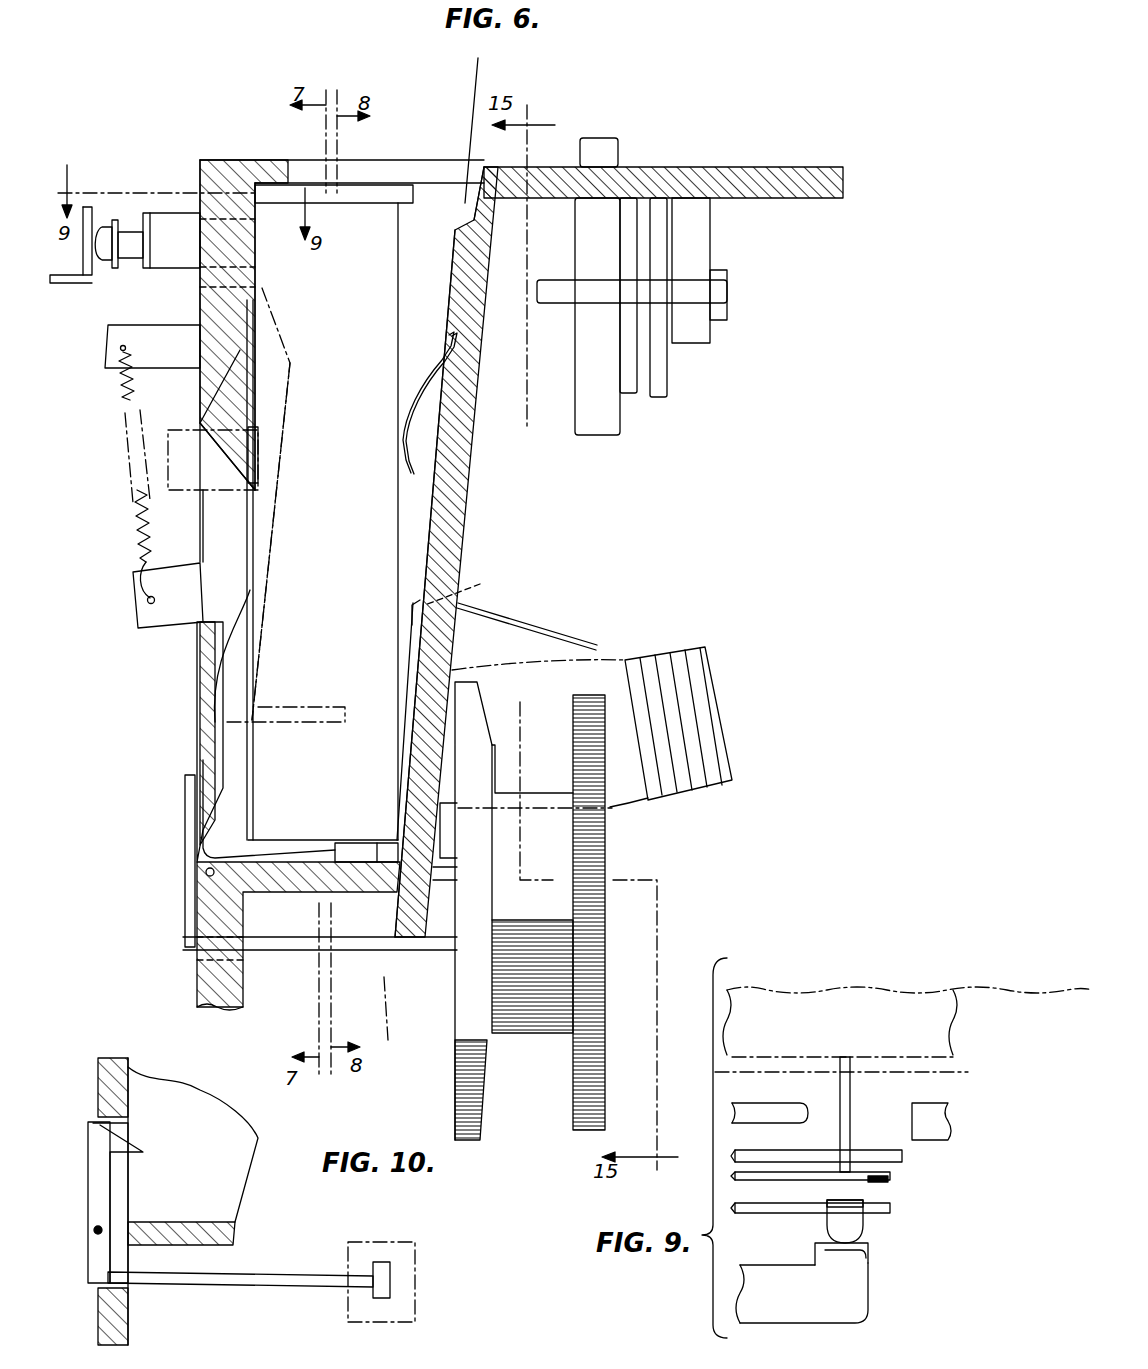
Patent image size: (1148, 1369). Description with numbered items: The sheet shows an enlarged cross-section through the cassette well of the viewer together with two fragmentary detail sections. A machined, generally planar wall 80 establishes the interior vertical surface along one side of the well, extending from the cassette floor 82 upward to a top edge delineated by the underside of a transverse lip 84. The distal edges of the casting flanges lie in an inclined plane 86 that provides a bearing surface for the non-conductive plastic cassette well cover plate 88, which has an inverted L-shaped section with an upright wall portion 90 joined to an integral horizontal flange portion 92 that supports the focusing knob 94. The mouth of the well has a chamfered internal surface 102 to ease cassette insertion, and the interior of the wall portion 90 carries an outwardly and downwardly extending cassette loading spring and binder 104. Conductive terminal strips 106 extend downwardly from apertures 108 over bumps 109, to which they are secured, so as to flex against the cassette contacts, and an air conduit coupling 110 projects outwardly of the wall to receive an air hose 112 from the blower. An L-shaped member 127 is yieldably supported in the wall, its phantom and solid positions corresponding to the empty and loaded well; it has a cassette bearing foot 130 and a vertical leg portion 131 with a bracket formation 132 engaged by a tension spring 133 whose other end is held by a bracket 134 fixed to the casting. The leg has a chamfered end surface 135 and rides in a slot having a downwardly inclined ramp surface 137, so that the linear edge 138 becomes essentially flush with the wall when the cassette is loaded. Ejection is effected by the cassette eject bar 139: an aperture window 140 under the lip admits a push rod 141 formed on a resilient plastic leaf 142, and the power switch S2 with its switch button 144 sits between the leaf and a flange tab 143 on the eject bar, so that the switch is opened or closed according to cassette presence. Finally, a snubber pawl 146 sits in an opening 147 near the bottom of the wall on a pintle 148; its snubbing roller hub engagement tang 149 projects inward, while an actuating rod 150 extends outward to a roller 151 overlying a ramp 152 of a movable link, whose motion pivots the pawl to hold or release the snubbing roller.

In FIG. 6, the wall 80 is at (258, 258).
In FIG. 10, the wall 80 is at (130, 1093).
In FIG. 6, the cassette floor 82 is at (335, 865).
In FIG. 10, the cassette floor 82 is at (175, 1222).
In FIG. 6, the transverse lip 84 is at (300, 186).
In FIG. 6, the inclined plane 86 is at (473, 84).
In FIG. 6, the cassette well cover plate 88 is at (482, 505).
In FIG. 6, the upright wall portion 90 is at (448, 565).
In FIG. 6, the horizontal flange portion 92 is at (778, 176).
In FIG. 6, the focusing knob 94 is at (600, 137).
In FIG. 6, the chamfered internal surface 102 is at (478, 222).
In FIG. 6, the cassette loading spring and binder 104 is at (430, 392).
In FIG. 6, the conductive terminal strips 106 is at (545, 625).
In FIG. 6, the apertures 108 is at (472, 592).
In FIG. 6, the bumps 109 is at (428, 642).
In FIG. 6, the air conduit coupling 110 is at (505, 672).
In FIG. 6, the air hose 112 is at (655, 662).
In FIG. 6, the L-shaped member 127 is at (262, 618).
In FIG. 6, the cassette bearing foot 130 is at (272, 848).
In FIG. 6, the vertical leg portion 131 is at (249, 750).
In FIG. 6, the bracket formation 132 is at (175, 602).
In FIG. 6, the tension spring 133 is at (130, 535).
In FIG. 6, the bracket 134 is at (112, 360).
In FIG. 6, the chamfered end surface 135 is at (257, 453).
In FIG. 6, the ramp surface 137 is at (255, 387).
In FIG. 6, the linear edge 138 is at (245, 673).
In FIG. 6, the cassette eject bar 139 is at (62, 283).
In FIG. 9, the cassette eject bar 139 is at (822, 1312).
In FIG. 9, the aperture window 140 is at (810, 1092).
In FIG. 9, the push rod 141 is at (850, 1118).
In FIG. 9, the resilient plastic leaf 142 is at (818, 1150).
In FIG. 9, the flange tab 143 is at (860, 1260).
In FIG. 9, the switch button 144 is at (850, 1228).
In FIG. 6, the snubber pawl 146 is at (188, 875).
In FIG. 10, the snubber pawl 146 is at (100, 1153).
In FIG. 10, the opening 147 is at (122, 1180).
In FIG. 10, the pintle 148 is at (97, 1222).
In FIG. 10, the snubbing roller hub engagement tang 149 is at (140, 1152).
In FIG. 10, the actuating rod 150 is at (303, 1270).
In FIG. 10, the roller 151 is at (385, 1272).
In FIG. 10, the ramp 152 is at (415, 1297).
In FIG. 9, the power switch S2 is at (875, 1188).